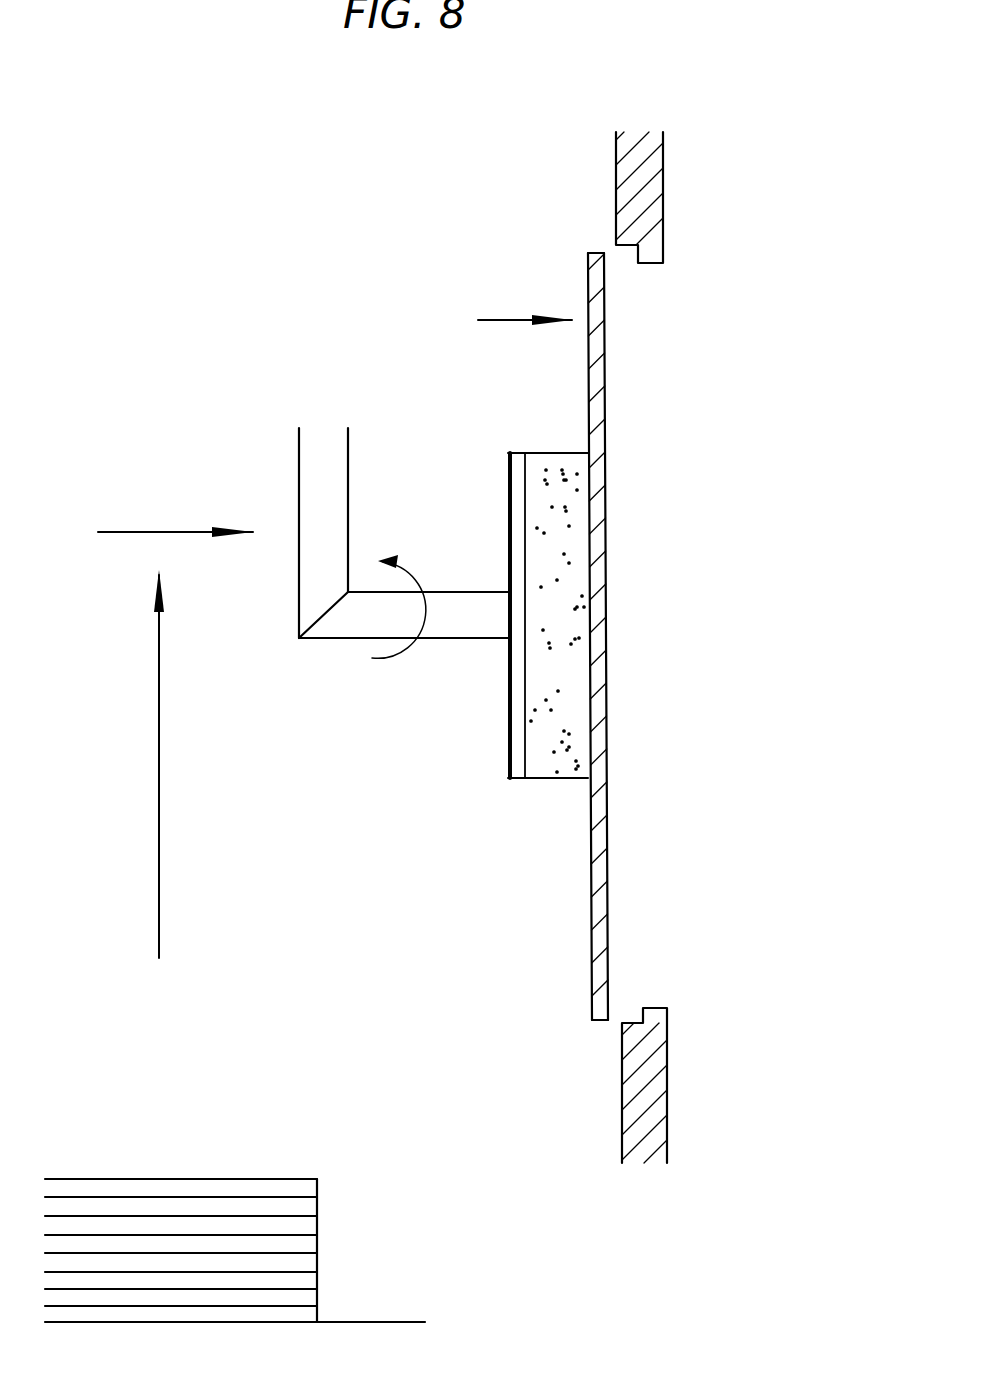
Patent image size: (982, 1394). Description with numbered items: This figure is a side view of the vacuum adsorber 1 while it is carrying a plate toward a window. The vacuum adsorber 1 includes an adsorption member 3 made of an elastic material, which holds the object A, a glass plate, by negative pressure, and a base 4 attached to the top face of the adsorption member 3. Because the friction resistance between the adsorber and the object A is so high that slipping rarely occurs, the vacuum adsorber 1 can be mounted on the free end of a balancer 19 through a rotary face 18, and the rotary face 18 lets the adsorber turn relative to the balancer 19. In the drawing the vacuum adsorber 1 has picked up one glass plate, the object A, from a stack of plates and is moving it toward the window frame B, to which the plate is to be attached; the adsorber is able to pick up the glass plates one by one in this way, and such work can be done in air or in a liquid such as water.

The vacuum adsorber 1 is at (485, 705).
The adsorption member 3 is at (553, 763).
The base 4 is at (513, 780).
The rotary face 18 is at (333, 612).
The balancer 19 is at (288, 613).
The object A is at (598, 647).
The window frame B is at (655, 187).